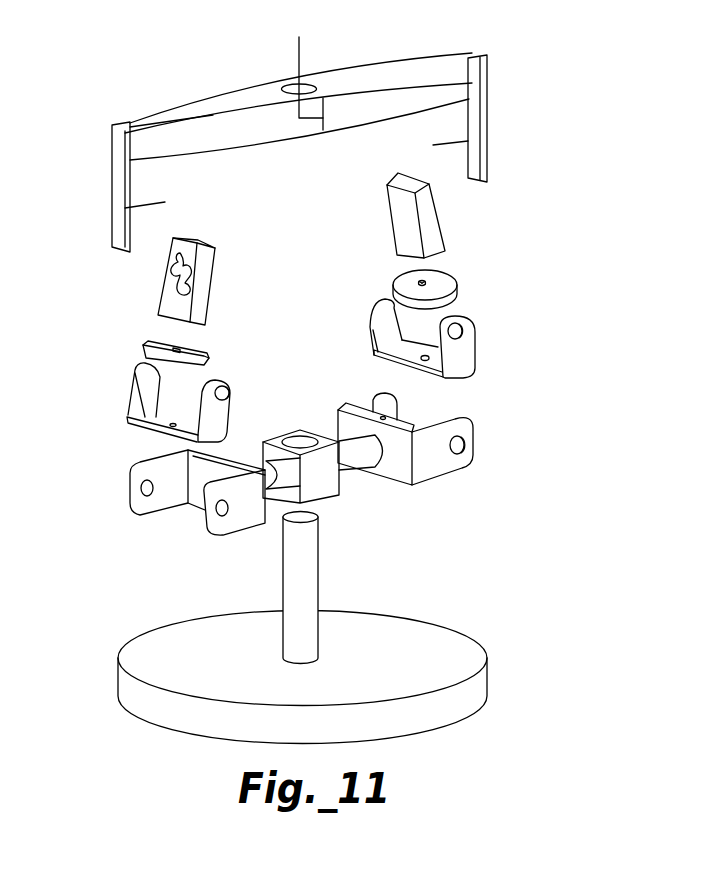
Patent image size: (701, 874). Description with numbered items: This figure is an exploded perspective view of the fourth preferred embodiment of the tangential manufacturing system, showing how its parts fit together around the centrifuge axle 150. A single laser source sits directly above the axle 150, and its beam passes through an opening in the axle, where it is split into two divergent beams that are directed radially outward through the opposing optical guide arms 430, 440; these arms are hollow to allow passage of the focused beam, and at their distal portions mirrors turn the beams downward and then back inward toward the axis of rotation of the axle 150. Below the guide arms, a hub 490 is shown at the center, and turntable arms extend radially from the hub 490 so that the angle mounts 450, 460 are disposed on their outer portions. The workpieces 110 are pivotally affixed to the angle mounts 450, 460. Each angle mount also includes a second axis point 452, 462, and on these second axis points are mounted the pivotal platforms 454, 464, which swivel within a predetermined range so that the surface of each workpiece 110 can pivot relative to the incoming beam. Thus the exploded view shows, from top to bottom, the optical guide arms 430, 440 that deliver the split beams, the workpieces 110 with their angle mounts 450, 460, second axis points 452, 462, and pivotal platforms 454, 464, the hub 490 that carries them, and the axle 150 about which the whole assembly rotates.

The optical guide arm 430 is at (172, 117).
The optical guide arm 440 is at (420, 62).
The workpiece 110 is at (393, 200).
The pivotal platform 464 is at (445, 282).
The second axis point 462 is at (463, 362).
The pivotal platform 454 is at (148, 345).
The second axis point 452 is at (133, 387).
The angle mount 450 is at (172, 497).
The angle mount 460 is at (438, 460).
The hub 490 is at (315, 483).
The axle 150 is at (303, 558).